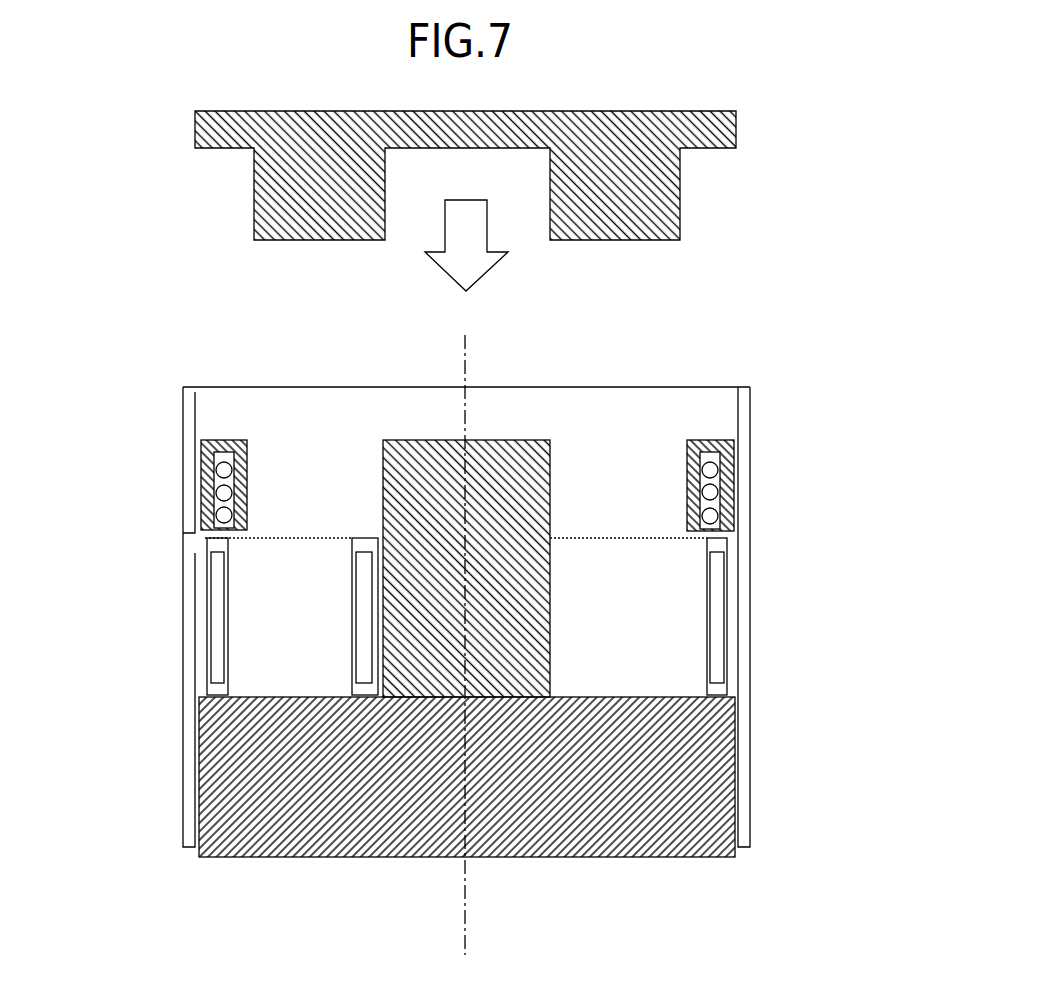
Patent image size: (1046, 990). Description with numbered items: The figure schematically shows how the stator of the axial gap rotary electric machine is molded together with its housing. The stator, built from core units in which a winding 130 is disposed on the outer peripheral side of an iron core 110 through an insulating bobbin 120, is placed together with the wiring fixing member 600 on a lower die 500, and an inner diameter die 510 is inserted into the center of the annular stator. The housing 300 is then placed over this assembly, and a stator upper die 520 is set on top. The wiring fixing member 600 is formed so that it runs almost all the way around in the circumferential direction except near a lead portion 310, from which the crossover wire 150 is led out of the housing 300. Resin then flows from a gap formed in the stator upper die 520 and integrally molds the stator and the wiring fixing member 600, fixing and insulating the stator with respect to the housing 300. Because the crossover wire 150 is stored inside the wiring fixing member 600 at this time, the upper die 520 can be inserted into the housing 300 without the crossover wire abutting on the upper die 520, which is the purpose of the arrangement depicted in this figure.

The iron core 110 is at (590, 645).
The insulating bobbin 120 is at (717, 545).
The winding 130 is at (718, 590).
The crossover wire 150 is at (738, 488).
The housing 300 is at (745, 459).
The lead portion 310 is at (192, 555).
The lower die 500 is at (715, 852).
The inner diameter die 510 is at (423, 439).
The stator upper die 520 is at (680, 241).
The wiring fixing member 600 is at (739, 446).